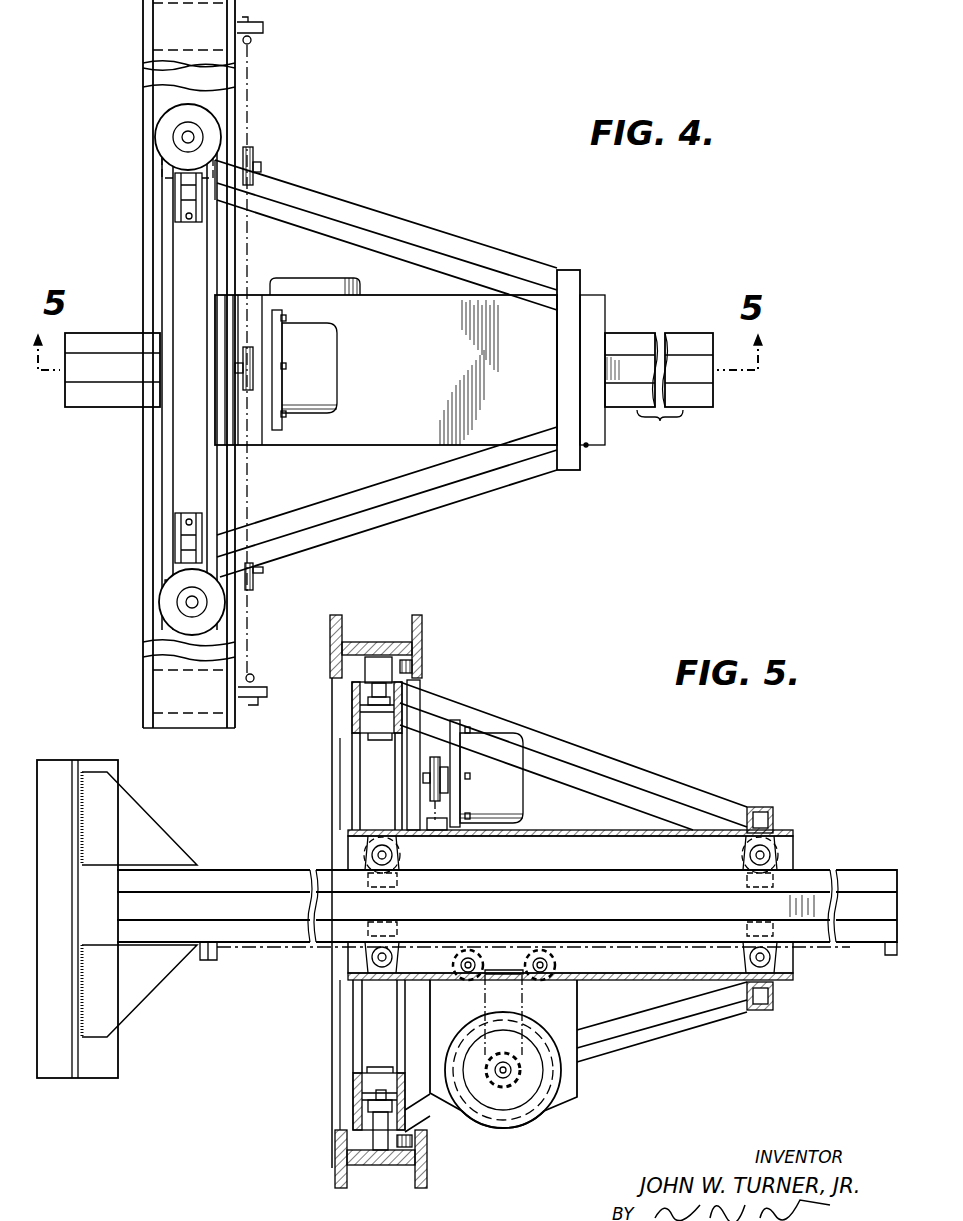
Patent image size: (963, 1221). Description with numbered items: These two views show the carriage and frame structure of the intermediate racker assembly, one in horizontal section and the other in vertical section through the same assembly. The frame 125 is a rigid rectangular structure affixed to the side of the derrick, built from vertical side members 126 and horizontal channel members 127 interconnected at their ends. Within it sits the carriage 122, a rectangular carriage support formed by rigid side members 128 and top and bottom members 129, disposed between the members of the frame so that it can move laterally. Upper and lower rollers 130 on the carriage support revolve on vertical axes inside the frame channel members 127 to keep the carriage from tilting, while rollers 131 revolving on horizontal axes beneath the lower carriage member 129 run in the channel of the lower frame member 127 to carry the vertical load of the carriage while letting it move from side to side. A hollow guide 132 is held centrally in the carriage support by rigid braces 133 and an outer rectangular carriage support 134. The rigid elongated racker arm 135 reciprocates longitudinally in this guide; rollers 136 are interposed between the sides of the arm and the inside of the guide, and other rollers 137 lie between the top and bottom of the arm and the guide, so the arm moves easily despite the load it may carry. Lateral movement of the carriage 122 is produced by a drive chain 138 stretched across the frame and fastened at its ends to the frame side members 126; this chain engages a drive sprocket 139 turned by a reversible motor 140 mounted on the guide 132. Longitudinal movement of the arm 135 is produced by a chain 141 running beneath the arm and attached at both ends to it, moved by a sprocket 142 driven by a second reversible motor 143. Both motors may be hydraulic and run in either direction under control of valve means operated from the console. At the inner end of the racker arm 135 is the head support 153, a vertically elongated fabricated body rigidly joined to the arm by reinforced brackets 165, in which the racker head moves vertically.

In FIG. 4, the carriage 122 is at (514, 258).
In FIG. 5, the carriage 122 is at (730, 792).
In FIG. 4, the frame 125 is at (146, 97).
In FIG. 5, the frame 125 is at (336, 1170).
In FIG. 4, the vertical side members 126 is at (160, 6).
In FIG. 5, the vertical side members 126 is at (340, 1000).
In FIG. 4, the horizontal channel members 127 is at (146, 76).
In FIG. 5, the horizontal channel members 127 is at (425, 629).
In FIG. 4, the rigid side members 128 is at (205, 128).
In FIG. 5, the rigid side members 128 is at (372, 766).
In FIG. 4, the top and bottom members 129 is at (183, 474).
In FIG. 5, the top and bottom members 129 is at (355, 718).
In FIG. 4, the upper and lower rollers 130 is at (160, 133).
In FIG. 5, the upper and lower rollers 130 is at (412, 664).
In FIG. 4, the rollers 131 is at (183, 203).
In FIG. 5, the rollers 131 is at (380, 658).
In FIG. 4, the hollow guide 132 is at (386, 445).
In FIG. 5, the hollow guide 132 is at (543, 830).
In FIG. 4, the rigid braces 133 is at (408, 231).
In FIG. 5, the rigid braces 133 is at (614, 768).
In FIG. 4, the outer rectangular carriage support 134 is at (575, 456).
In FIG. 5, the outer rectangular carriage support 134 is at (768, 1011).
In FIG. 4, the racker arm 135 is at (673, 330).
In FIG. 5, the racker arm 135 is at (245, 872).
In FIG. 5, the rollers 136 is at (385, 924).
In FIG. 5, the rollers 137 is at (394, 855).
In FIG. 4, the drive chain 138 is at (249, 254).
In FIG. 5, the drive chain 138 is at (438, 820).
In FIG. 4, the drive sprocket 139 is at (243, 380).
In FIG. 5, the drive sprocket 139 is at (435, 757).
In FIG. 4, the reversible motor 140 is at (325, 340).
In FIG. 5, the reversible motor 140 is at (518, 745).
In FIG. 5, the chain 141 is at (634, 950).
In FIG. 5, the sprocket 142 is at (512, 1084).
In FIG. 4, the reversible motor 143 is at (362, 287).
In FIG. 5, the reversible motor 143 is at (548, 1090).
In FIG. 5, the head support 153 is at (62, 1080).
In FIG. 5, the reinforced brackets 165 is at (175, 960).